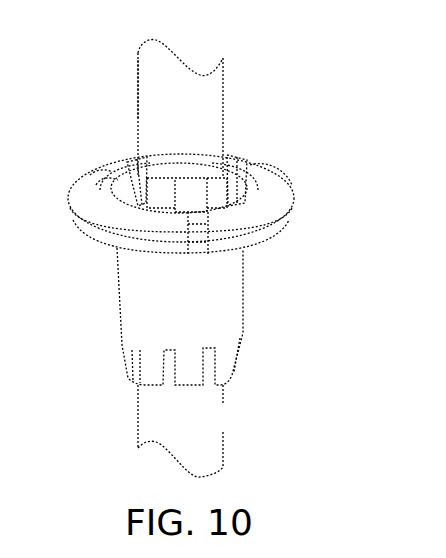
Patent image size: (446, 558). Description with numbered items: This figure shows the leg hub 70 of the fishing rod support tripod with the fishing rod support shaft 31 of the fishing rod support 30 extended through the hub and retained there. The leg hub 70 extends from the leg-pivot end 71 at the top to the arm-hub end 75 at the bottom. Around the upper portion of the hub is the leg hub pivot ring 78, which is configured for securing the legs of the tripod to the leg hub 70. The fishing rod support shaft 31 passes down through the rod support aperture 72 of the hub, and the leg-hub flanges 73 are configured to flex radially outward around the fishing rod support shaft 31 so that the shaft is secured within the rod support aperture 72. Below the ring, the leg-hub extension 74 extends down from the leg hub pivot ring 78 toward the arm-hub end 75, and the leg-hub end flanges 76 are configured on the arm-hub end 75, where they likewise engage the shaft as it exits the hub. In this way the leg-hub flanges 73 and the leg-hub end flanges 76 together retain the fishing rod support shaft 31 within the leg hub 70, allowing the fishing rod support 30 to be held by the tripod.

The fishing rod support 30 is at (202, 112).
The fishing rod support shaft 31 is at (151, 116).
The leg hub 70 is at (255, 220).
The leg-pivot end 71 is at (223, 174).
The rod support aperture 72 is at (146, 177).
The leg-hub flanges 73 is at (143, 198).
The leg-hub extension 74 is at (212, 308).
The arm-hub end 75 is at (220, 380).
The leg-hub end flanges 76 is at (150, 360).
The leg hub pivot ring 78 is at (270, 190).